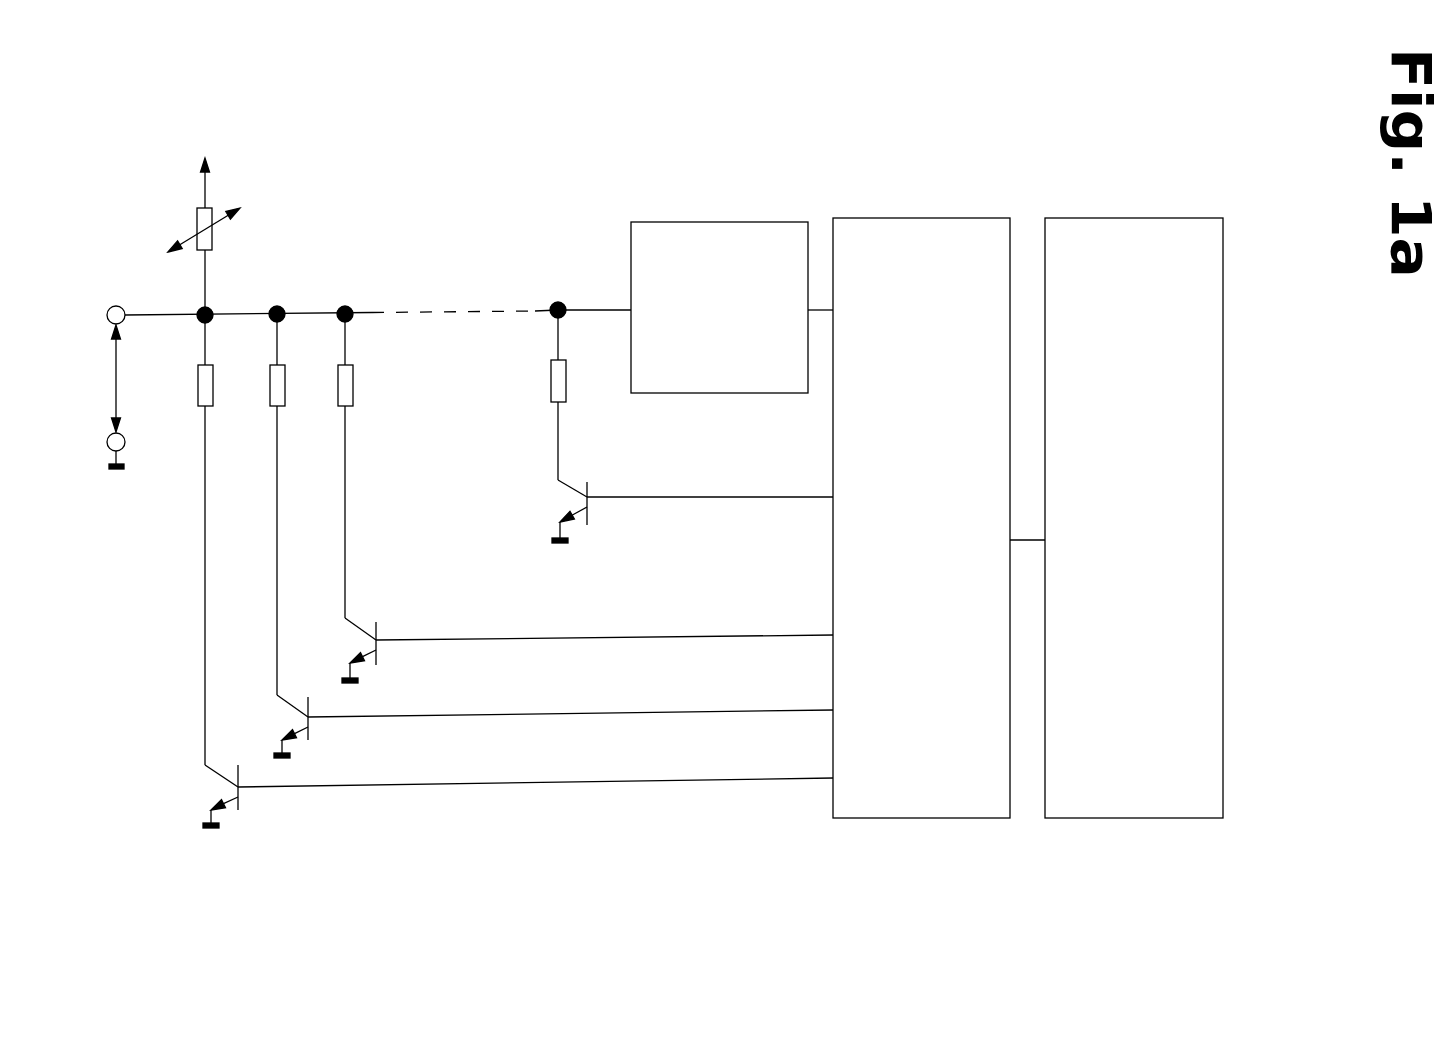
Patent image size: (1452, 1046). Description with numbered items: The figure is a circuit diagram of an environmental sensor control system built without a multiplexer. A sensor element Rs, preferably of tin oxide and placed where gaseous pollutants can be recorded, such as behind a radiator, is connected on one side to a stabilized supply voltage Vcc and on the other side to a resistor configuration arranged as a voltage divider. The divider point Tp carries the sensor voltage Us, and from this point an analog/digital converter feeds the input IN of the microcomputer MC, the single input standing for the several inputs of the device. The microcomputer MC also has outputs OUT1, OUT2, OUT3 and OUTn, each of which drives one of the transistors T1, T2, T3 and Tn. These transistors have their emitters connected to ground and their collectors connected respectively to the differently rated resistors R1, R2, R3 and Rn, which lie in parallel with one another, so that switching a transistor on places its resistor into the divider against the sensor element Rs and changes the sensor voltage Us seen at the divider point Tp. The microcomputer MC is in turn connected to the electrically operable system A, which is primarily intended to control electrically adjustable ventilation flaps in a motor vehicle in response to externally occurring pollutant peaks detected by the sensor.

The stabilized supply voltage Vcc is at (251, 156).
The sensor element Rs is at (171, 261).
The divider point Tp is at (222, 301).
The sensor voltage Us is at (90, 397).
The resistor of resistor configuration R1 is at (225, 540).
The resistor of resistor configuration R2 is at (295, 500).
The resistor of resistor configuration R3 is at (365, 462).
The resistor of resistor configuration Rn is at (584, 391).
The transistor T1 is at (504, 796).
The transistor T2 is at (536, 726).
The transistor T3 is at (572, 650).
The transistor Tn is at (673, 510).
The microcomputer MC is at (721, 535).
The microcomputer input IN is at (862, 308).
The microcomputer output OUT1 is at (860, 805).
The microcomputer output OUT2 is at (898, 714).
The microcomputer output OUT3 is at (898, 644).
The microcomputer output OUTn is at (900, 510).
The electrically operable system A is at (1157, 202).